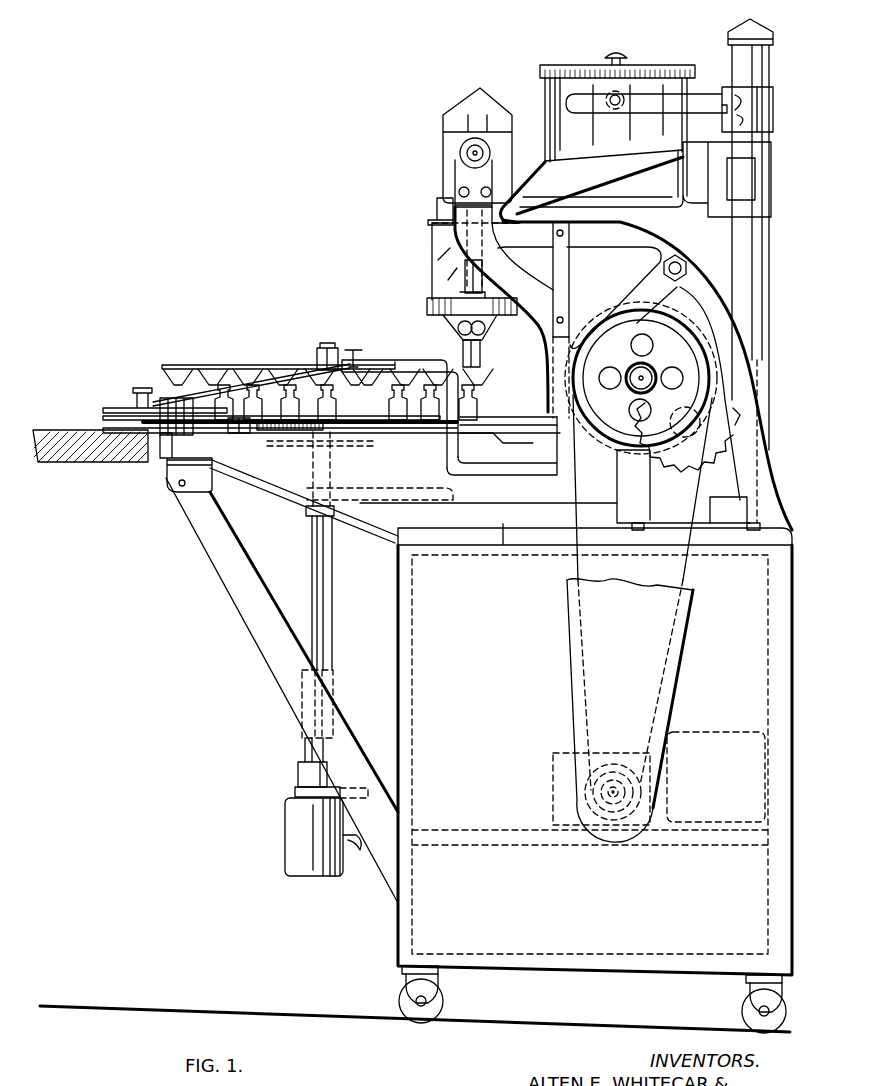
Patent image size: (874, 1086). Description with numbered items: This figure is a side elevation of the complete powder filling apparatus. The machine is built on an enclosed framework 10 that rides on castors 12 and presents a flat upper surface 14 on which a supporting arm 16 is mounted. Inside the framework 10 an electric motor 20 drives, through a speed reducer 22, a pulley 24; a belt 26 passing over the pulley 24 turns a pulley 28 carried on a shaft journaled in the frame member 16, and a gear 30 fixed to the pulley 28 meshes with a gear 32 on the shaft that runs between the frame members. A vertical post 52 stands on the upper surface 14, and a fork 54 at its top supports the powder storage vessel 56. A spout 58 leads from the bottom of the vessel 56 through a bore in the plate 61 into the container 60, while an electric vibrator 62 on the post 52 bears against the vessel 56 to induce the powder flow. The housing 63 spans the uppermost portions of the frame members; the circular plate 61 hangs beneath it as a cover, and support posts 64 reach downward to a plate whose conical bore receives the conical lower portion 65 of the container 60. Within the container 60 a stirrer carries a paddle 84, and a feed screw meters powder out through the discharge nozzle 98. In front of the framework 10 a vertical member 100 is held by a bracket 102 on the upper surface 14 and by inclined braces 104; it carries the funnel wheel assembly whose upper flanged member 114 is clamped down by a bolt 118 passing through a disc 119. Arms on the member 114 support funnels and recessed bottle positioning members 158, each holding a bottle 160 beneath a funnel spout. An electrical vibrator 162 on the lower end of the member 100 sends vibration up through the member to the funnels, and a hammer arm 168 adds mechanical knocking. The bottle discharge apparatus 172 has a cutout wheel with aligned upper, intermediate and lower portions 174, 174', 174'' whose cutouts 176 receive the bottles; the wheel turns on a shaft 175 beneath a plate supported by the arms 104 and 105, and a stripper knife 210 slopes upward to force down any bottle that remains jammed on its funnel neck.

The enclosed framework 10 is at (397, 656).
The castors 12 is at (402, 986).
The flat upper surface 14 is at (560, 541).
The supporting arm 16 is at (748, 413).
The electric motor 20 is at (728, 750).
The speed reducer 22 is at (565, 770).
The pulley 24 is at (610, 770).
The belt 26 is at (567, 570).
The pulley 28 is at (608, 340).
The gear 30 is at (655, 372).
The gear 32 is at (674, 470).
The post 52 is at (760, 272).
The fork 54 is at (708, 100).
The powder storage vessel 56 is at (552, 105).
The spout 58 is at (535, 192).
The container 60 is at (440, 244).
The plate 61 is at (434, 220).
The electric vibrator 62 is at (712, 205).
The housing 63 is at (447, 151).
The support posts 64 is at (465, 272).
The conical lower portion 65 is at (457, 327).
The paddle 84 is at (460, 338).
The discharge nozzle 98 is at (480, 357).
The vertically extending member 100 is at (332, 592).
The bracket 102 is at (340, 516).
The inclined braces 104 is at (266, 645).
The arm 105 is at (272, 492).
The upper flanged member 114 is at (284, 364).
The bolt 118 is at (353, 349).
The disc 119 is at (320, 356).
The bottle positioning members 158 is at (377, 362).
The bottle 160 is at (273, 378).
The electrical vibrator 162 is at (296, 828).
The hammer arm 168 is at (452, 460).
The bottle discharge apparatus 172 is at (87, 379).
The upper portion of cutout wheel 174 is at (178, 406).
The intermediate portion of cutout wheel 174' is at (243, 401).
The lower portion of cutout wheel 174'' is at (303, 424).
The shaft 175 is at (166, 443).
The cutouts 176 is at (150, 436).
The stripper knife 210 is at (208, 385).